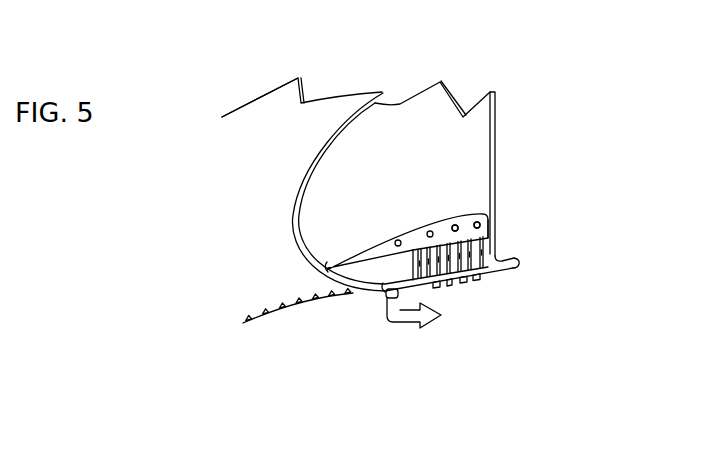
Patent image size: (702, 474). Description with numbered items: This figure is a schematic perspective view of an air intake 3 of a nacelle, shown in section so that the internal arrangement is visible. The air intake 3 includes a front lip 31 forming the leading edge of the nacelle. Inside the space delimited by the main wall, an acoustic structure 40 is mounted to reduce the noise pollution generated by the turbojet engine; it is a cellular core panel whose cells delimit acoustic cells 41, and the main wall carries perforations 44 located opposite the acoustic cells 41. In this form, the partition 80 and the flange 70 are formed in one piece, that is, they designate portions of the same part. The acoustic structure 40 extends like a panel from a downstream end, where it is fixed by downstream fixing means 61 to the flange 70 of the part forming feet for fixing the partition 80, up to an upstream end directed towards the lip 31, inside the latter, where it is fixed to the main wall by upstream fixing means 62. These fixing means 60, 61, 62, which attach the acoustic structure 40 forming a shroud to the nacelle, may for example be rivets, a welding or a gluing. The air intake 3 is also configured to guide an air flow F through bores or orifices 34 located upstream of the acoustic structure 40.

The air intake 3 is at (267, 114).
The front lip 31 is at (291, 220).
The bores or orifices 34 is at (387, 296).
The acoustic structure 40 is at (422, 224).
The acoustic cells 41 is at (481, 281).
The perforations 44 is at (462, 284).
The fixing means 60 is at (505, 221).
The downstream fixing means 61 is at (480, 222).
The upstream fixing means 62 is at (410, 291).
The flange 70 is at (520, 261).
The partition 80 is at (497, 120).
The air flow F is at (400, 318).